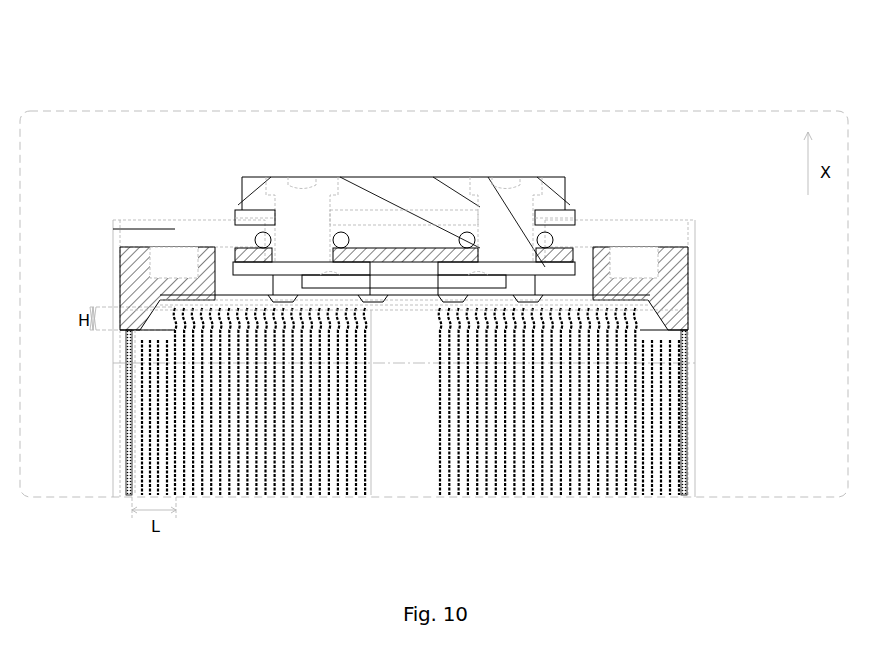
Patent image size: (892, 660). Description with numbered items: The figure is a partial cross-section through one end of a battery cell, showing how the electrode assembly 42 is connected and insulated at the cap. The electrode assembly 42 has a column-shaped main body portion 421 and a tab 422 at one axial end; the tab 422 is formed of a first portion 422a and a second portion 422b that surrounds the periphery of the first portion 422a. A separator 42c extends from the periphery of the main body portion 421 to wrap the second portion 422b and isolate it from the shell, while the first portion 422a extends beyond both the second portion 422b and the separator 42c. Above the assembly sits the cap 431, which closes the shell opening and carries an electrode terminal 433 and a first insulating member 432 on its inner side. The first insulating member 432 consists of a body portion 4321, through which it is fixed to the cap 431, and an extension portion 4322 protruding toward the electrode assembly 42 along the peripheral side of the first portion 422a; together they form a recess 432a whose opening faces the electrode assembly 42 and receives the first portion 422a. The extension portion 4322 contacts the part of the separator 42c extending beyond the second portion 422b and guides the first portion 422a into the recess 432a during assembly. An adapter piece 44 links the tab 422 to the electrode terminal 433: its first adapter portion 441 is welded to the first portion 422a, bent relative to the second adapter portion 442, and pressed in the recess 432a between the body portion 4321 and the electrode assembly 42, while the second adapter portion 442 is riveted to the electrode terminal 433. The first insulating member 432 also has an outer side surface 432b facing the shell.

The electrode assembly 42 is at (790, 305).
The main body portion 421 is at (630, 415).
The tab 422 is at (752, 298).
The first portion 422a is at (640, 316).
The second portion 422b is at (650, 340).
The separator 42c is at (157, 336).
The cap 431 is at (672, 228).
The first insulating member 432 is at (200, 70).
The body portion 4321 is at (140, 270).
The extension portion 4322 is at (118, 300).
The recess 432a is at (647, 240).
The outer side surface 432b is at (660, 300).
The electrode terminal 433 is at (408, 177).
The adapter piece 44 is at (350, 70).
The first adapter portion 441 is at (248, 297).
The second adapter portion 442 is at (402, 250).